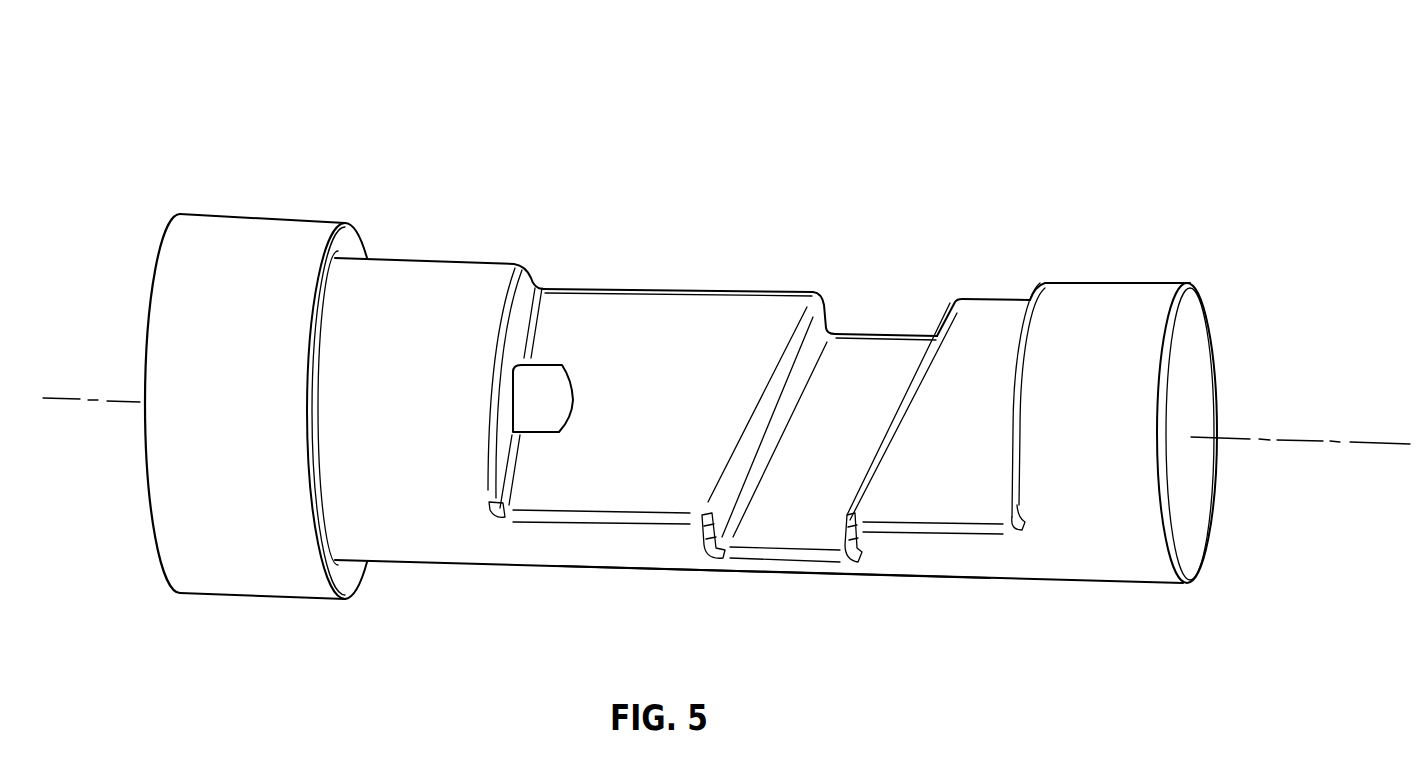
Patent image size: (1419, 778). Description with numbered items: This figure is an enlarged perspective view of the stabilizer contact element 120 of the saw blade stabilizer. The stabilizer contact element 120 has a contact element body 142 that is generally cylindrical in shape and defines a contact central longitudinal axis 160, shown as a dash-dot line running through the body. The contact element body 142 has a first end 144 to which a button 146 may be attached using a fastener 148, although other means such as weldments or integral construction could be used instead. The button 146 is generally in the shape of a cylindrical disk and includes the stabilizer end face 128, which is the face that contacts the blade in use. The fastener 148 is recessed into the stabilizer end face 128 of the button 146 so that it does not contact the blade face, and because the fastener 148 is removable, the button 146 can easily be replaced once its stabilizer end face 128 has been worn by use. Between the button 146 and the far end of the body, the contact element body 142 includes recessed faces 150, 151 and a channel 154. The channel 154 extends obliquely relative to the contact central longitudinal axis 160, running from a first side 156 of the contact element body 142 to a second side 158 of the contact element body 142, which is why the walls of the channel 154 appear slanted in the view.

The stabilizer contact element 120 is at (1192, 77).
The stabilizer end face 128 is at (157, 260).
The contact element body 142 is at (1112, 313).
The first end 144 is at (405, 278).
The button 146 is at (240, 247).
The fastener 148 is at (574, 370).
The recessed face 150 is at (708, 327).
The recessed face 151 is at (997, 335).
The channel 154 is at (862, 342).
The first side 156 is at (912, 333).
The second side 158 is at (773, 562).
The contact central longitudinal axis 160 is at (1365, 441).